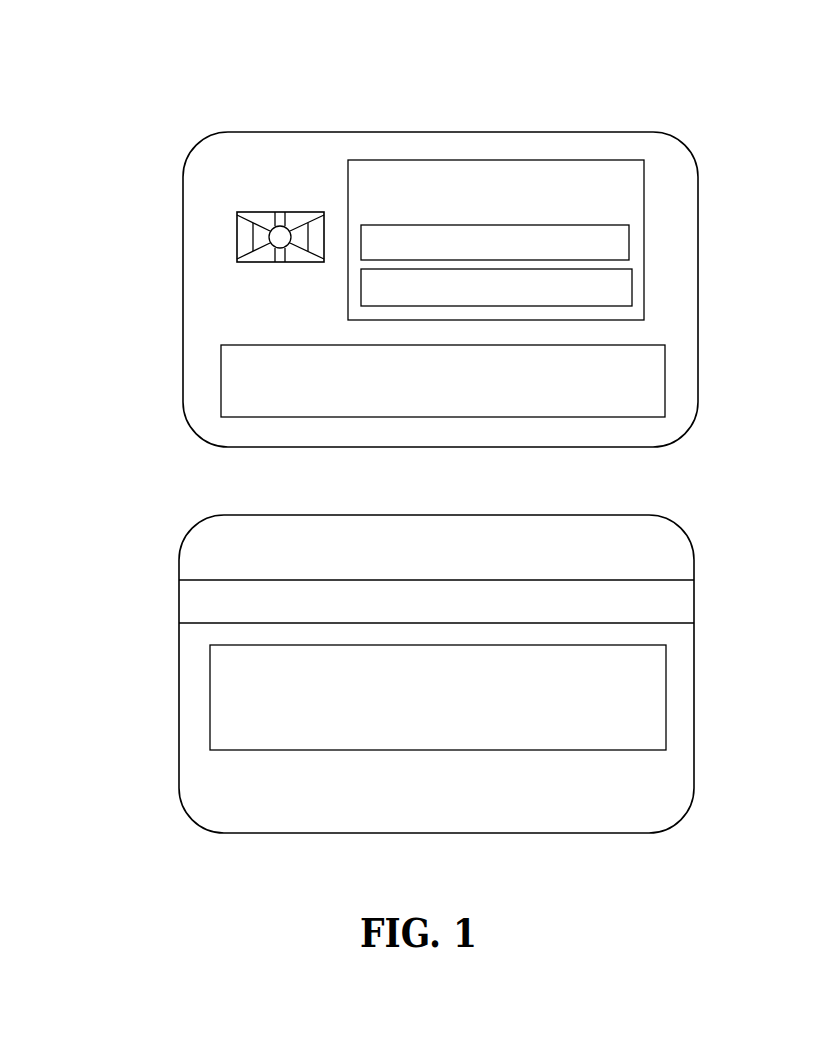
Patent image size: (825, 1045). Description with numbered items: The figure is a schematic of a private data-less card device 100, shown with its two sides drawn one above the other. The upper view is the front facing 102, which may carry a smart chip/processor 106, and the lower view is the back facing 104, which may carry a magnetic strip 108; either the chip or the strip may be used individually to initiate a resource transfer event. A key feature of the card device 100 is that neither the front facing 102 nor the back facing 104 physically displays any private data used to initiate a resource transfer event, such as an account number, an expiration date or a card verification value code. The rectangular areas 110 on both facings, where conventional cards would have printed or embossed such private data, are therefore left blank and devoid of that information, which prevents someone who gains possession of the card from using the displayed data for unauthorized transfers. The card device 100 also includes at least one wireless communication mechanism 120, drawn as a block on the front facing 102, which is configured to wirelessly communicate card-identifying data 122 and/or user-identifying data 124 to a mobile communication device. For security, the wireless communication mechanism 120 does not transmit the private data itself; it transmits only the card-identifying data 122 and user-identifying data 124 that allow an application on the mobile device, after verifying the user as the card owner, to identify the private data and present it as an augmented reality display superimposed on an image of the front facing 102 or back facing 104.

The card device 100 is at (437, 71).
The front facing 102 is at (667, 182).
The back facing 104 is at (669, 550).
The smart chip/processor 106 is at (247, 245).
The magnetic strip 108 is at (202, 602).
The areas 110 is at (647, 385).
The wireless communication mechanism 120 is at (496, 240).
The card-identifying data 122 is at (495, 242).
The user-identifying data 124 is at (496, 287).